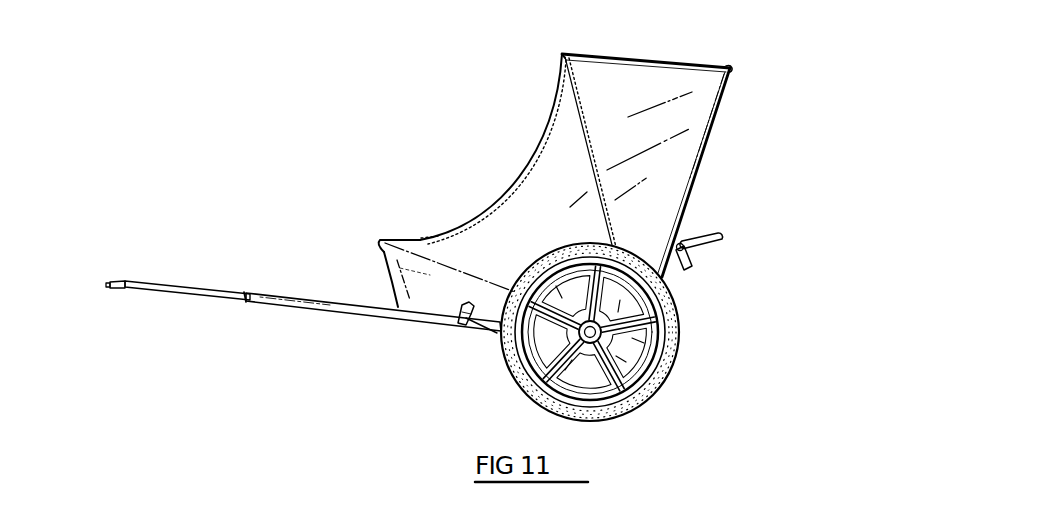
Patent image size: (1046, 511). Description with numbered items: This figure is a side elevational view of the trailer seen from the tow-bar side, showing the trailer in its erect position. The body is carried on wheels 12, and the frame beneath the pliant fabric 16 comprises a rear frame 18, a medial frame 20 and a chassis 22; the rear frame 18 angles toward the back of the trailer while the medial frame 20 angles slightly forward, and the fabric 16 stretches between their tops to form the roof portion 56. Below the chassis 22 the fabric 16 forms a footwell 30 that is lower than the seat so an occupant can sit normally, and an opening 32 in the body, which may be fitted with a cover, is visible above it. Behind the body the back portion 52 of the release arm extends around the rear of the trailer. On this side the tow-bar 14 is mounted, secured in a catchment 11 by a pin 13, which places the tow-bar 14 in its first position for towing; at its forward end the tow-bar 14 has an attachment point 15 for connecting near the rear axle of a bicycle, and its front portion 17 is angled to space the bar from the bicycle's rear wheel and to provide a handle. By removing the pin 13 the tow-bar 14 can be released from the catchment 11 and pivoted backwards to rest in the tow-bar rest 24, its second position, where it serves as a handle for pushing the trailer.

The catchment 11 is at (450, 298).
The wheels 12 is at (663, 372).
The pin 13 is at (460, 324).
The tow-bar 14 is at (318, 312).
The attachment point 15 is at (110, 290).
The pliant fabric 16 is at (547, 231).
The front portion of the tow-bar 17 is at (198, 298).
The rear frame 18 is at (735, 68).
The medial frame 20 is at (562, 52).
The chassis 22 is at (380, 240).
The tow-bar rest 24 is at (690, 268).
The footwell 30 is at (405, 283).
The opening 32 is at (503, 189).
The back portion 52 is at (720, 236).
The roof portion 56 is at (653, 60).